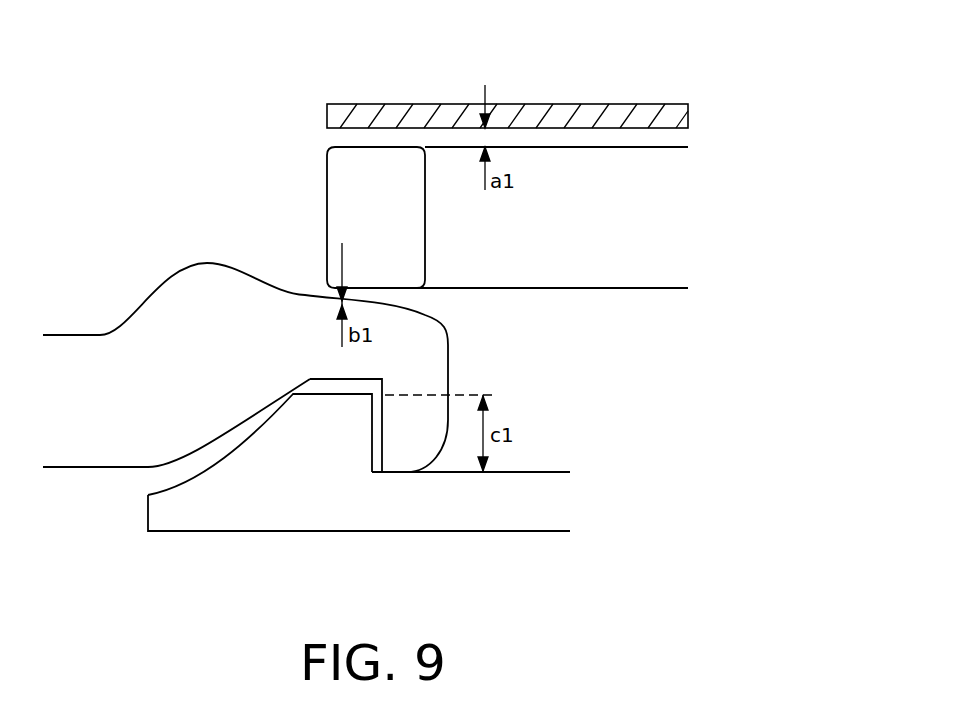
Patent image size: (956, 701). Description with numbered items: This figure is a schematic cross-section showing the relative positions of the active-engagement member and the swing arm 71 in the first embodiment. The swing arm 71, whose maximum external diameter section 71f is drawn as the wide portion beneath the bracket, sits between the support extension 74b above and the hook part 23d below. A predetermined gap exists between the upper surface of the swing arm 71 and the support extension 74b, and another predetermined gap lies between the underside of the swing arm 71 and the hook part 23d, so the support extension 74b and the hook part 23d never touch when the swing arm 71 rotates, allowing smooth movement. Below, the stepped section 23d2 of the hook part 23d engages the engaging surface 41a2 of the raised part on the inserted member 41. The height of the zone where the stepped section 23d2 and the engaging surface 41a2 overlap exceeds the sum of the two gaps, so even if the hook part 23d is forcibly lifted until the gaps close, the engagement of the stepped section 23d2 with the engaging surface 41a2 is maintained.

The support extension 74b is at (362, 105).
The swing arm 71 is at (613, 265).
The maximum external diameter section 71f is at (342, 173).
The hook part 23d is at (306, 292).
The inserted member 41 is at (269, 479).
The stepped section 23d2 is at (380, 416).
The engaging surface 41a2 is at (372, 443).